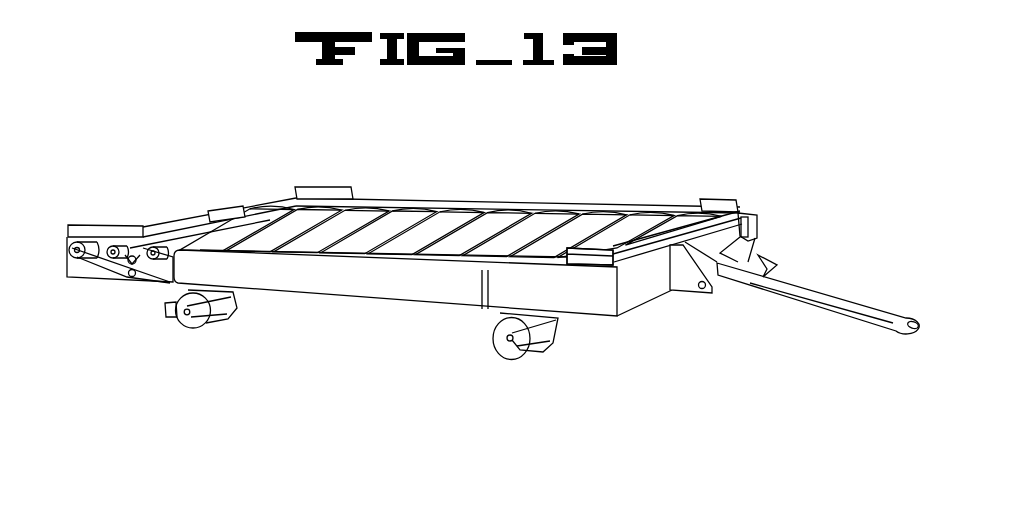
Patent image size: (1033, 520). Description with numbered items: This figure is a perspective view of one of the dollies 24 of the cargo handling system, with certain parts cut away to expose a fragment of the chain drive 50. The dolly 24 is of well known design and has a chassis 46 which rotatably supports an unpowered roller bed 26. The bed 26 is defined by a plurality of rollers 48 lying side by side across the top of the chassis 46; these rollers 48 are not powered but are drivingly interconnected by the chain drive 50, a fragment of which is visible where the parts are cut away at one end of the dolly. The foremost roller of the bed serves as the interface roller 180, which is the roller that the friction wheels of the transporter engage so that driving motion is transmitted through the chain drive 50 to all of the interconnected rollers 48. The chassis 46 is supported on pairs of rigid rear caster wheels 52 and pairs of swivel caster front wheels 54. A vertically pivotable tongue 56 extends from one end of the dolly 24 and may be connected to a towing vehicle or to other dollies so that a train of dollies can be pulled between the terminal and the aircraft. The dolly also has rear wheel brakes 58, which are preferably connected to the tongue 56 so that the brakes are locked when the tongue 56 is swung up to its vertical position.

The dolly 24 is at (601, 178).
The roller bed 26 is at (487, 220).
The chassis 46 is at (378, 288).
The rollers 48 is at (366, 196).
The chain drive 50 is at (100, 268).
The rigid rear caster wheels 52 is at (203, 321).
The swivel caster front wheels 54 is at (547, 340).
The tongue 56 is at (811, 288).
The rear wheel brakes 58 is at (168, 308).
The interface roller 180 is at (262, 207).